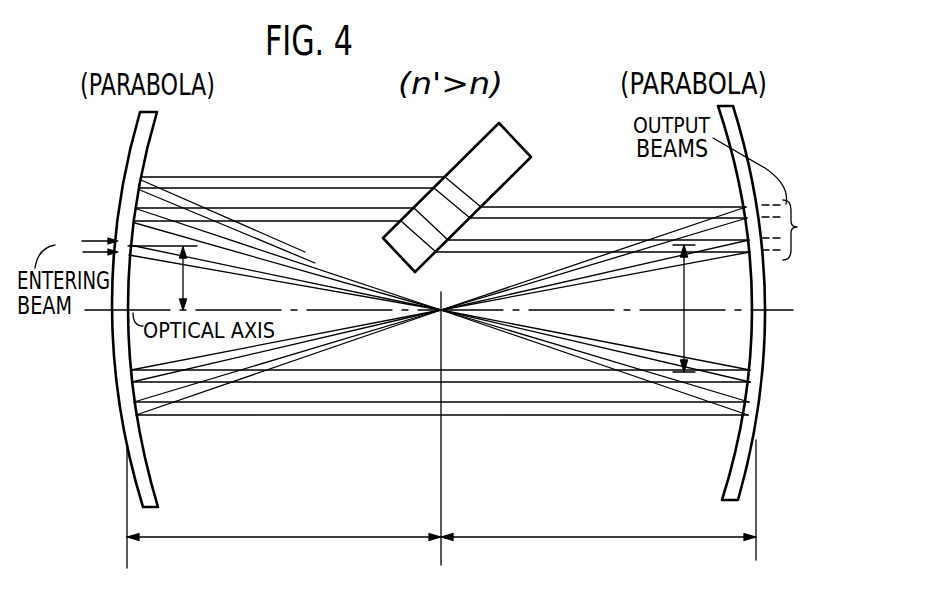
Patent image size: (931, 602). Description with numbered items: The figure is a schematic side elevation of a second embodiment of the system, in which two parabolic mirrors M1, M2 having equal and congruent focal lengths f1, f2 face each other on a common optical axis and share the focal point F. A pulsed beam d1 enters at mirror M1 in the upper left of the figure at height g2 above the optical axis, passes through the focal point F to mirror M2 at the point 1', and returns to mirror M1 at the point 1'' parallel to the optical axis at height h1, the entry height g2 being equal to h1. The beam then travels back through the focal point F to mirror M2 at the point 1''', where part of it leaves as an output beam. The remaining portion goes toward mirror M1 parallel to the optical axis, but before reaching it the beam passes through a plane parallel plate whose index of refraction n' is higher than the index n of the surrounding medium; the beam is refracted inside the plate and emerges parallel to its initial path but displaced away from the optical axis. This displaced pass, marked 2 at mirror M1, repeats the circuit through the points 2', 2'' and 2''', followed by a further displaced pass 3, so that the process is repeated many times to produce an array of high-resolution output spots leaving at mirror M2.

The parabolic mirror M1 is at (119, 309).
The parabolic mirror M2 is at (750, 303).
The focal point F is at (437, 413).
The index of refraction of plane parallel plate n' is at (472, 180).
The index of refraction of surrounding medium n is at (301, 134).
The pulsed beam d1 is at (88, 253).
The entry height g2 is at (173, 278).
The beam height h1 is at (676, 308).
The focal length f1 is at (284, 537).
The focal length f2 is at (598, 560).
The third beam pass at M1 3 is at (138, 184).
The second beam pass at M1 2 is at (252, 225).
The beam point on M2 1' is at (621, 355).
The second beam reflection point at M2 2' is at (622, 370).
The beam point on M1 1'' is at (414, 357).
The second beam reflection point at M1 2'' is at (412, 381).
The beam point on M2 1''' is at (608, 270).
The second output beam at M2 2''' is at (625, 193).